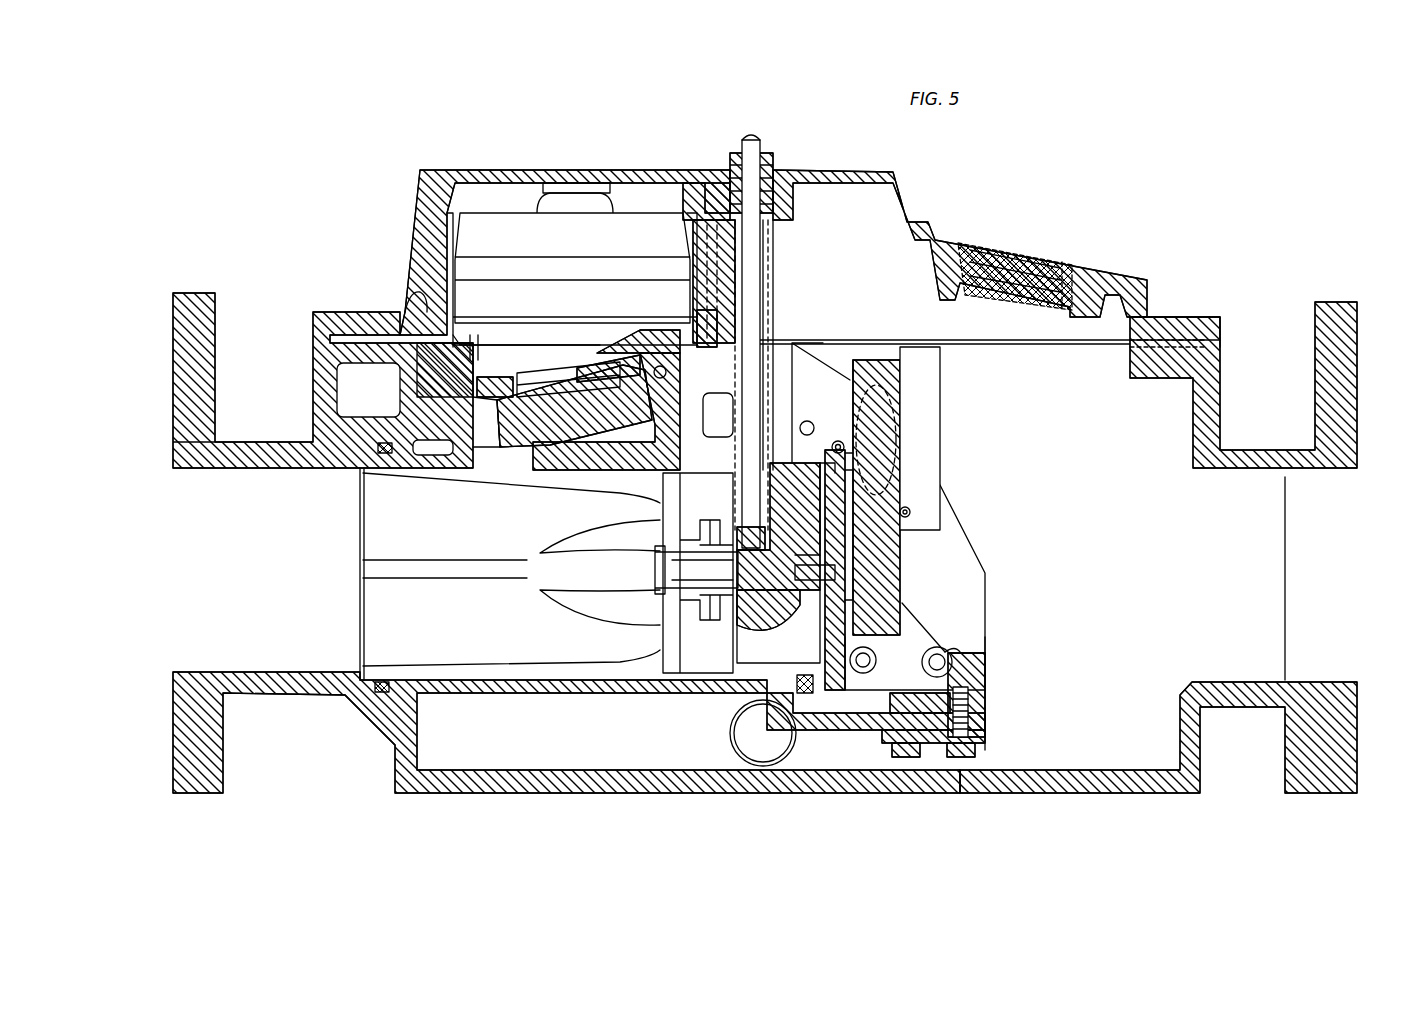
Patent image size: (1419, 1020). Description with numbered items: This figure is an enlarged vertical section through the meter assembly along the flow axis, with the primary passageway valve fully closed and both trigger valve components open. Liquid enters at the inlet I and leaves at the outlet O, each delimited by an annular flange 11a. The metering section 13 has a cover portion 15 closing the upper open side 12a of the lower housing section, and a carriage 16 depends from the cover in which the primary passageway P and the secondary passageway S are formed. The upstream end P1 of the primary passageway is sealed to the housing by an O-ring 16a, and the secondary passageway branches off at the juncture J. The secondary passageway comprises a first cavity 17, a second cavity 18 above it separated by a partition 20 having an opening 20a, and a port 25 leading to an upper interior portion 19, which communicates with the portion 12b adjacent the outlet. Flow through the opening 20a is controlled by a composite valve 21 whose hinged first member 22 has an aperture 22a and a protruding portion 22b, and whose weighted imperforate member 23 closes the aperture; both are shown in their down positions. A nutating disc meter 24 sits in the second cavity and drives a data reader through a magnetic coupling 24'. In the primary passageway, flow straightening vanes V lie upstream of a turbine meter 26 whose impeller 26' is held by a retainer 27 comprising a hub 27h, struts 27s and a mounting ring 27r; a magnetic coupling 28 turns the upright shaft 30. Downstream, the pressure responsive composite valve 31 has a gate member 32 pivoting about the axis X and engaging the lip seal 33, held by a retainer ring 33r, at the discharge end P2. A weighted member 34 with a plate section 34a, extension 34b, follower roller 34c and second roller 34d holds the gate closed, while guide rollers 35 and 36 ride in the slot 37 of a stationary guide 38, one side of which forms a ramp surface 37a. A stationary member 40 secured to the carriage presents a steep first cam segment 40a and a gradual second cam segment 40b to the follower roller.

The annular collars or flanges 11a is at (185, 305).
The upper open side 12a is at (1130, 357).
The portion adjacent outlet 12b is at (1152, 584).
The second or metering section 13 is at (1127, 258).
The cover portion 15 is at (1186, 325).
The carriage 16 is at (432, 375).
The annular O-ring 16a is at (370, 673).
The first cavity 17 is at (648, 450).
The second cavity 18 is at (447, 225).
The upper interior portion 19 is at (868, 272).
The partition 20 is at (460, 330).
The opening 20a is at (568, 392).
The composite valve 21 is at (485, 405).
The first member 22 is at (628, 362).
The aperture 22a is at (527, 375).
The protruding portion 22b is at (478, 392).
The weighted imperforate member 23 is at (523, 430).
The meter 24 is at (583, 232).
The magnetic coupling 24' is at (583, 165).
The port 25 is at (733, 235).
The meter 26 is at (694, 598).
The turbine impeller 26' is at (658, 563).
The stationary retainer 27 is at (828, 565).
The hub 27h is at (797, 618).
The mounting ring 27r is at (790, 730).
The struts 27s is at (793, 512).
The magnetic coupling 28 is at (750, 545).
The shaft 30 is at (762, 287).
The pressure responsive composite valve 31 is at (922, 562).
The gate member 32 is at (838, 545).
The annular lip-type seal 33 is at (820, 462).
The retainer ring 33r is at (820, 458).
The weighted member 34 is at (885, 583).
The plate section 34a is at (832, 528).
The transversely disposed extension 34b is at (960, 642).
The follower roller 34c is at (962, 655).
The second roller 34d is at (883, 665).
The guide rollers 35 is at (885, 470).
The guide rollers 36 is at (872, 365).
The slot 37 is at (915, 420).
The ramp-like surface 37a is at (825, 365).
The stationary guide 38 is at (920, 390).
The stationary member 40 is at (992, 710).
The first cam segment 40a is at (968, 683).
The second cam segment 40b is at (962, 655).
The inlet I is at (186, 545).
The outlet O is at (1340, 558).
The flow straightening vanes V is at (393, 613).
The primary passageway P is at (533, 645).
The upstream end of primary passageway P1 is at (373, 673).
The discharge end of primary passageway P2 is at (795, 675).
The secondary passageway S is at (493, 363).
The juncture J is at (478, 440).
The fixed horizontal axis X is at (840, 440).